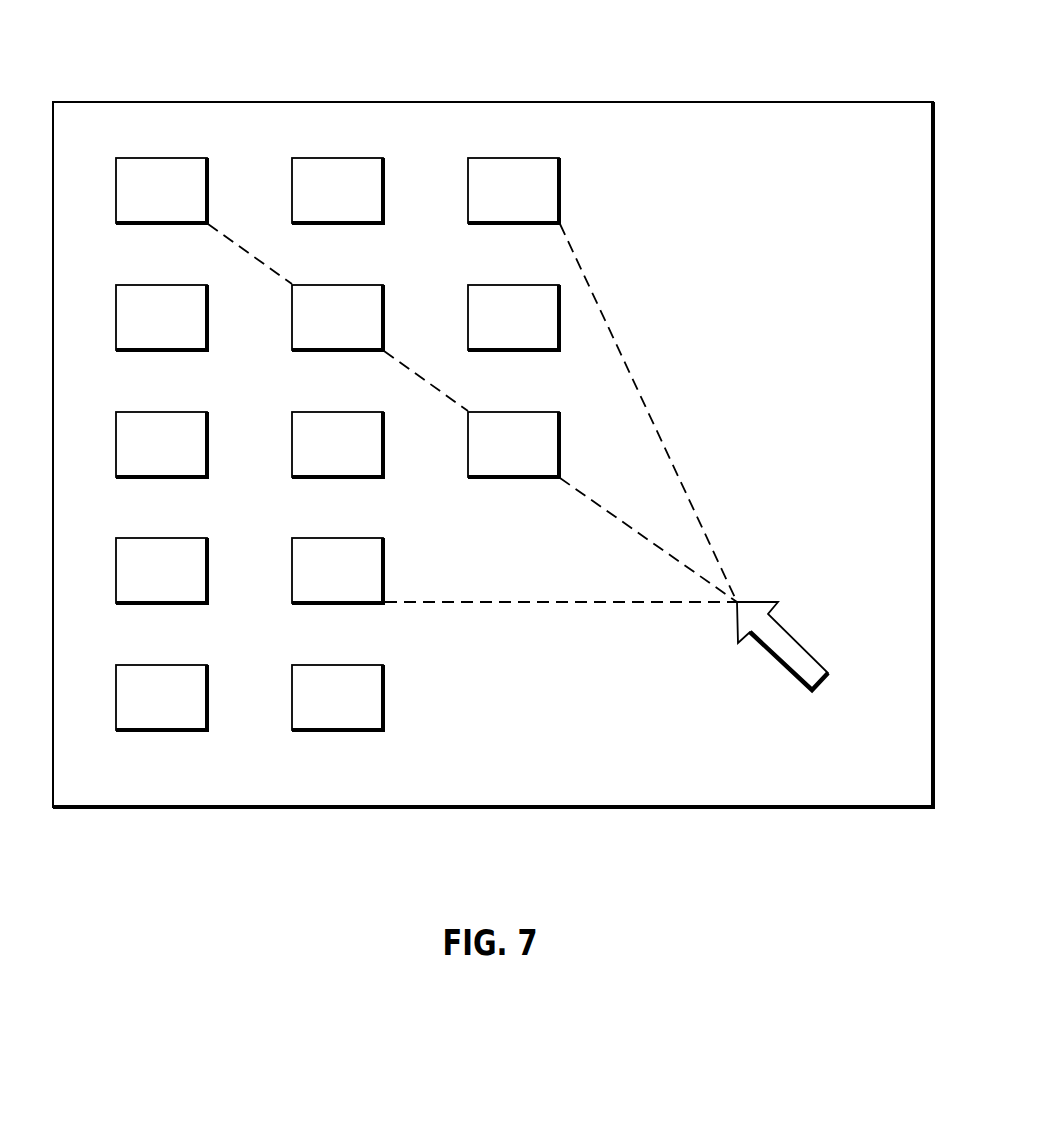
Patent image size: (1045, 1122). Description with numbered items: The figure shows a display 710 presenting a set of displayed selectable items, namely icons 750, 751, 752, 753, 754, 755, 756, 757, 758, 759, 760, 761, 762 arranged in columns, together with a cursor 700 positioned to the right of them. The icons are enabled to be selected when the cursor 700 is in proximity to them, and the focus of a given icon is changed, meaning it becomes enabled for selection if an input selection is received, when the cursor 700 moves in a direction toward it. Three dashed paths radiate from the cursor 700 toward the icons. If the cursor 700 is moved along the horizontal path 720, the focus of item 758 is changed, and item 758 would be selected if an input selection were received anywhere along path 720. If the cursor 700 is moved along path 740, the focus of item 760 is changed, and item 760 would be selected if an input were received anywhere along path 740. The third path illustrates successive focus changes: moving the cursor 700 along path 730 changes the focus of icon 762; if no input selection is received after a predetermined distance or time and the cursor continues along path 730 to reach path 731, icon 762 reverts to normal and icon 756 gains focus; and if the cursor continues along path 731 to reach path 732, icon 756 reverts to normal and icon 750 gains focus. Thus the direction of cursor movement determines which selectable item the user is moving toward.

The cursor 700 is at (797, 652).
The display screen 710 is at (738, 115).
The path 720 is at (553, 603).
The path 730 is at (573, 480).
The path 731 is at (450, 402).
The path 732 is at (272, 270).
The path 740 is at (633, 372).
The icon 750 is at (143, 205).
The icon 751 is at (143, 332).
The icon 752 is at (143, 459).
The icon 753 is at (143, 585).
The icon 754 is at (143, 712).
The icon 755 is at (319, 205).
The icon 756 is at (319, 332).
The icon 757 is at (319, 459).
The item 758 is at (319, 585).
The icon 759 is at (319, 712).
The item 760 is at (495, 205).
The icon 761 is at (495, 332).
The icon 762 is at (495, 459).